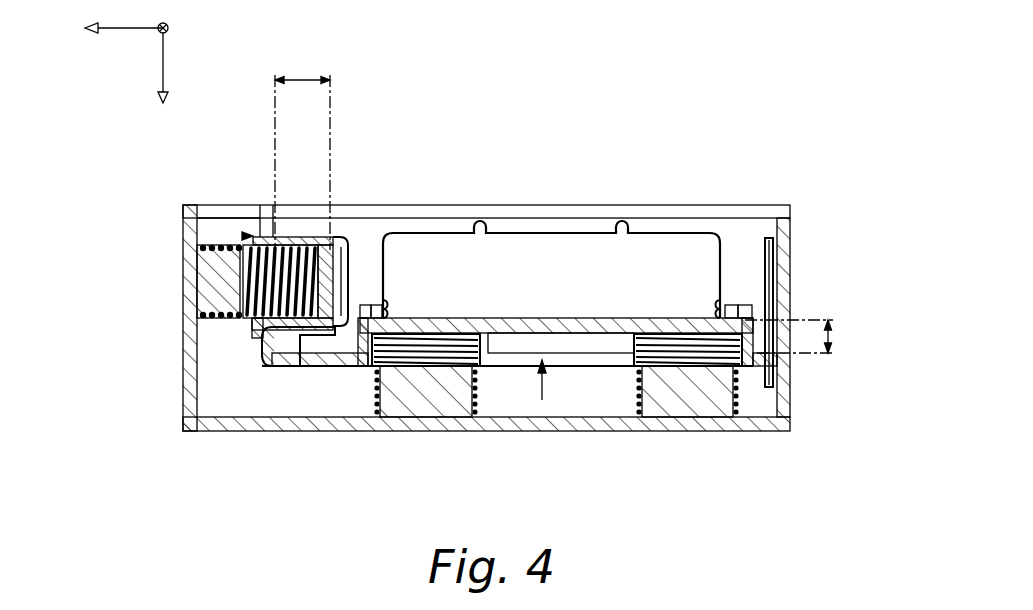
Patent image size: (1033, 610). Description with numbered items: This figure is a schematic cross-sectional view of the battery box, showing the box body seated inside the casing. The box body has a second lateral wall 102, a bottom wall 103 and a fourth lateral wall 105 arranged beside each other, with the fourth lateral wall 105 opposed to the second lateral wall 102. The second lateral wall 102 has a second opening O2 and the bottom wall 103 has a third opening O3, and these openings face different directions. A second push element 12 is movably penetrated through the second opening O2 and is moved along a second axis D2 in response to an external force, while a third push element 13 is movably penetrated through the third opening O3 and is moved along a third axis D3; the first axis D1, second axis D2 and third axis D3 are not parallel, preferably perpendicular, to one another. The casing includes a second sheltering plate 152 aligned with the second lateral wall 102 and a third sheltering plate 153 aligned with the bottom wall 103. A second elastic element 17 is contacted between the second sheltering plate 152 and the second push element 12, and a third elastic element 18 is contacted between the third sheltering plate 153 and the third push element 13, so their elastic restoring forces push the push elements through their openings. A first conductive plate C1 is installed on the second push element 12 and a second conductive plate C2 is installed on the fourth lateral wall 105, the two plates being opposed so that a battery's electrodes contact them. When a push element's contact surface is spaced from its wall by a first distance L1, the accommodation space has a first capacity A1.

The second push element 12 is at (252, 322).
The third push element 13 is at (580, 323).
The second elastic element 17 is at (240, 260).
The third elastic element 18 is at (428, 350).
The second lateral wall 102 is at (265, 345).
The bottom wall 103 is at (330, 362).
The fourth lateral wall 105 is at (785, 290).
The second sheltering plate 152 is at (185, 396).
The third sheltering plate 153 is at (218, 425).
The first capacity A1 is at (578, 294).
The first conductive plate C1 is at (350, 248).
The second conductive plate C2 is at (768, 236).
The second opening O2 is at (242, 236).
The third opening O3 is at (542, 400).
The first distance L1 is at (569, 201).
The first axis D1 is at (104, 30).
The second axis D2 is at (187, 30).
The third axis D3 is at (165, 84).